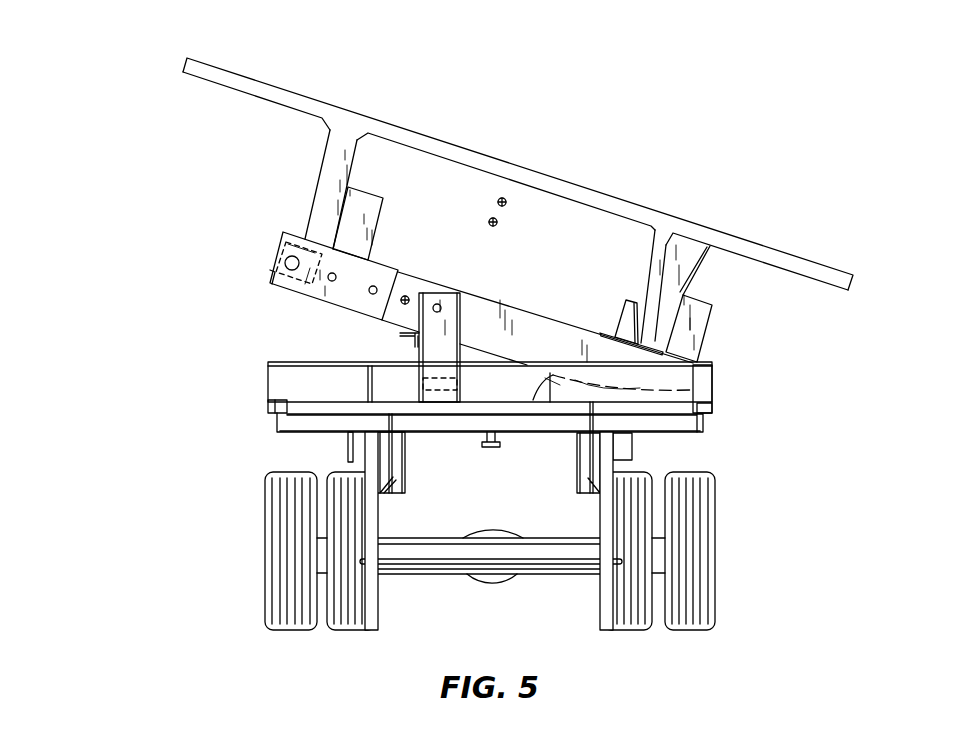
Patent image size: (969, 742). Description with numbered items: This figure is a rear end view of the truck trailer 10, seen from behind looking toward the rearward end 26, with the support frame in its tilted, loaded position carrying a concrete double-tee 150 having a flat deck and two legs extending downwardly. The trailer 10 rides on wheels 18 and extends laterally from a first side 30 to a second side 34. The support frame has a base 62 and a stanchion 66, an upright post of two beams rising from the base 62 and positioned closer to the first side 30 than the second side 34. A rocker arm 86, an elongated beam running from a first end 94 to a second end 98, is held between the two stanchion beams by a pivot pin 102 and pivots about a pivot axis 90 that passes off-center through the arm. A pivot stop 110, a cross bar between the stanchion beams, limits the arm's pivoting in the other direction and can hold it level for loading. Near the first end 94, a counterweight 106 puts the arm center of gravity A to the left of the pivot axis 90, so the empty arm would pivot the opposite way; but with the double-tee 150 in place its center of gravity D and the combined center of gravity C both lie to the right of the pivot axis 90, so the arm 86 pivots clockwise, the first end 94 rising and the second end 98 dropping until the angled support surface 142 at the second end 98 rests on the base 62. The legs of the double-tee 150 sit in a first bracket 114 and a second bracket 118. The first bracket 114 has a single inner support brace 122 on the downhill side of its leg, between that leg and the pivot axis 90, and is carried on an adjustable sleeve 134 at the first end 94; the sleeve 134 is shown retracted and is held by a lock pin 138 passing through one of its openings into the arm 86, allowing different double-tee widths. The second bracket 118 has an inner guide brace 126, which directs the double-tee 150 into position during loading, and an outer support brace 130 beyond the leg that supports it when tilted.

The truck trailer 10 is at (188, 472).
The wheels 18 is at (716, 547).
The rearward end 26 is at (455, 423).
The first side 30 is at (270, 413).
The second side 34 is at (703, 425).
The base 62 is at (714, 391).
The stanchion 66 is at (460, 330).
The rocker arm 86 is at (537, 327).
The pivot axis 90 is at (431, 296).
The first end 94 is at (290, 236).
The second end 98 is at (714, 380).
The pivot pin 102 is at (441, 305).
The counterweight 106 is at (271, 285).
The pivot stop 110 is at (410, 338).
The first bracket 114 is at (362, 142).
The second bracket 118 is at (683, 293).
The support brace 122 is at (375, 196).
The guide brace 126 is at (630, 301).
The support brace 130 is at (712, 308).
The adjustable sleeve 134 is at (297, 230).
The lock pin 138 is at (284, 266).
The support surface 142 is at (713, 406).
The concrete double-tee 150 is at (285, 90).
The arm center of gravity A is at (405, 295).
The combined center of gravity C is at (498, 221).
The double-tee center of gravity D is at (507, 201).